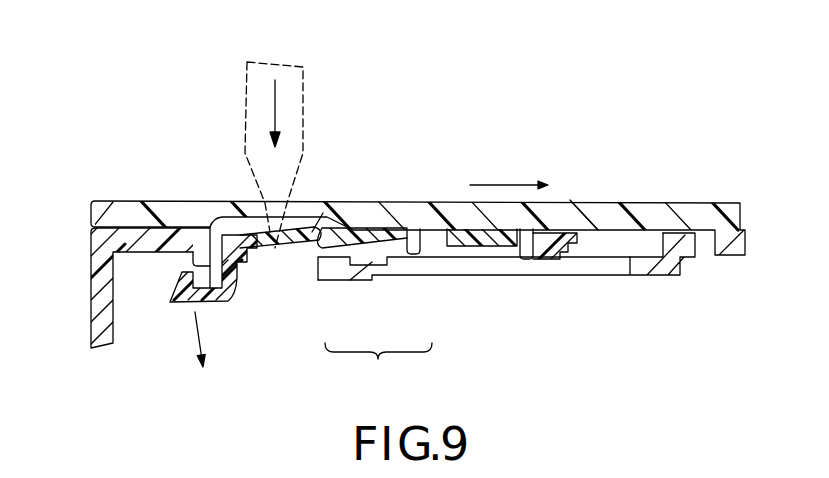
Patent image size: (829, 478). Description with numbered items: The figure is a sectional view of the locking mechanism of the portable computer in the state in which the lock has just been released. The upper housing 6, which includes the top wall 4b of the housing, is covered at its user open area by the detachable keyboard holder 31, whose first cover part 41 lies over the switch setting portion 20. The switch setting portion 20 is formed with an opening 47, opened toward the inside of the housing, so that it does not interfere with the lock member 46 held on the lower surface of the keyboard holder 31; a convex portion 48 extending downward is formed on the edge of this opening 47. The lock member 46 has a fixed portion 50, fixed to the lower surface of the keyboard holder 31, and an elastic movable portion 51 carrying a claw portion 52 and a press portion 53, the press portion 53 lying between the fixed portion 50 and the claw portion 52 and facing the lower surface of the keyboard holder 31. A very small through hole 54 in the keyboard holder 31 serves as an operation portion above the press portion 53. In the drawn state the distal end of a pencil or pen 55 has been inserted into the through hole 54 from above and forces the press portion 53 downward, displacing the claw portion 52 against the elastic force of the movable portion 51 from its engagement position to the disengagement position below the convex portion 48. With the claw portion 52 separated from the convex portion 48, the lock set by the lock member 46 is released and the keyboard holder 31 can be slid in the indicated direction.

The top wall 4b is at (703, 247).
The upper housing 6 is at (93, 283).
The switch setting portion 20 is at (640, 240).
The keyboard holder 31 is at (434, 198).
The first cover part 41 is at (582, 214).
The lock member 46 is at (378, 369).
The opening 47 is at (222, 225).
The convex portion 48 is at (208, 227).
The fixed portion 50 is at (444, 237).
The movable portion 51 is at (320, 248).
The claw portion 52 is at (178, 292).
The press portion 53 is at (272, 250).
The through hole 54 is at (295, 200).
The pencil or pen 55 is at (290, 105).